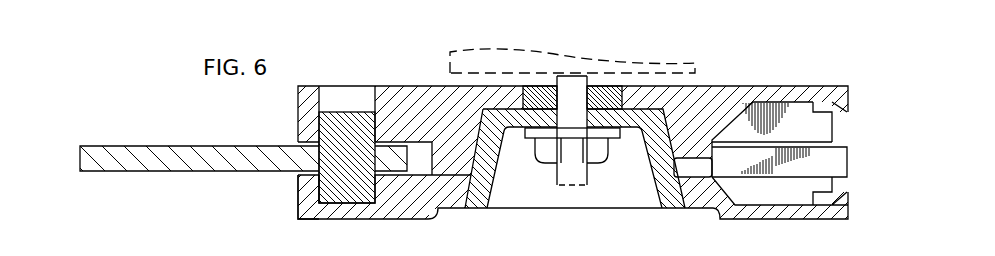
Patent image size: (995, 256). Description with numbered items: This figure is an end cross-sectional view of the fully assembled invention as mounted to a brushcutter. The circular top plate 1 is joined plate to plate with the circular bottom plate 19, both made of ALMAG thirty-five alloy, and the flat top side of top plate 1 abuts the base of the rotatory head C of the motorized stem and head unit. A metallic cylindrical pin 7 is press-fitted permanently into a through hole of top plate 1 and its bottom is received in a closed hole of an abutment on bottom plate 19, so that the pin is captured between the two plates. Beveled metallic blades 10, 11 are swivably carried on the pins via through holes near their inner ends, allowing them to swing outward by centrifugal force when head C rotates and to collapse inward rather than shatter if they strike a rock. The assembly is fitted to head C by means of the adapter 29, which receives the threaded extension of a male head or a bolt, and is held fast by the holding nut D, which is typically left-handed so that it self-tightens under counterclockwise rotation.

The top plate 1 is at (408, 86).
The metallic cylindrical pin 7 is at (348, 112).
The beveled metallic blade 10 is at (200, 145).
The beveled metallic blade 11 is at (838, 160).
The bottom plate 19 is at (298, 194).
The adapter 29 is at (602, 86).
The rotatory head C is at (566, 55).
The holding nut D is at (540, 164).